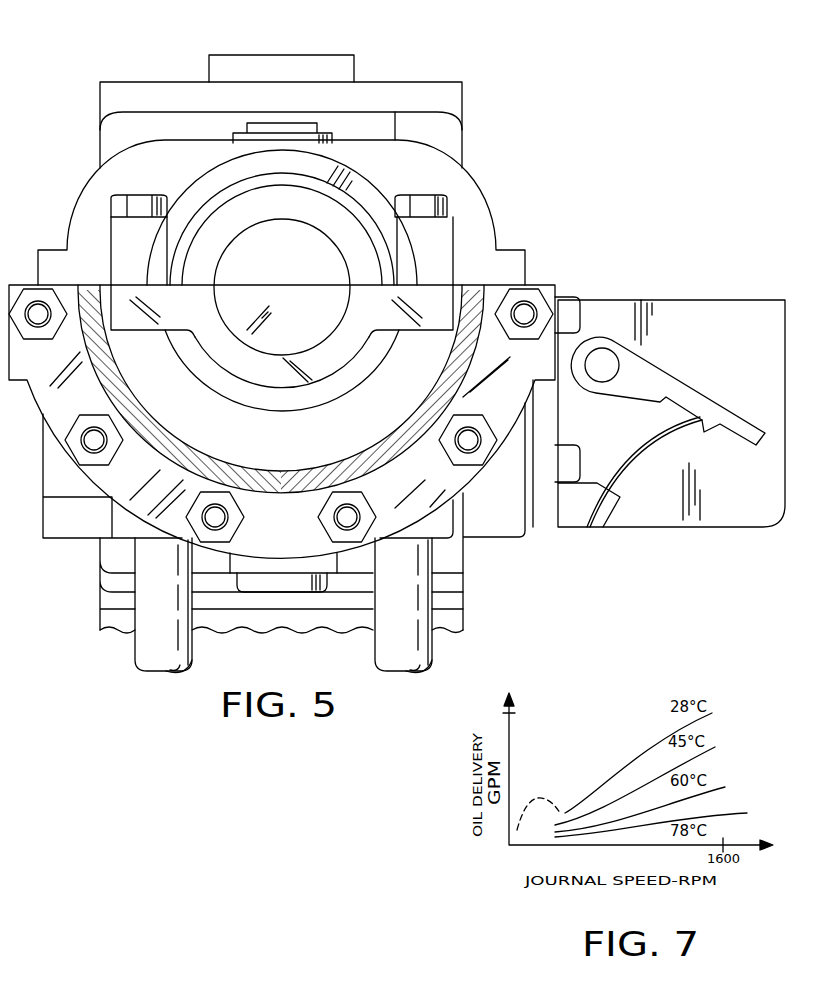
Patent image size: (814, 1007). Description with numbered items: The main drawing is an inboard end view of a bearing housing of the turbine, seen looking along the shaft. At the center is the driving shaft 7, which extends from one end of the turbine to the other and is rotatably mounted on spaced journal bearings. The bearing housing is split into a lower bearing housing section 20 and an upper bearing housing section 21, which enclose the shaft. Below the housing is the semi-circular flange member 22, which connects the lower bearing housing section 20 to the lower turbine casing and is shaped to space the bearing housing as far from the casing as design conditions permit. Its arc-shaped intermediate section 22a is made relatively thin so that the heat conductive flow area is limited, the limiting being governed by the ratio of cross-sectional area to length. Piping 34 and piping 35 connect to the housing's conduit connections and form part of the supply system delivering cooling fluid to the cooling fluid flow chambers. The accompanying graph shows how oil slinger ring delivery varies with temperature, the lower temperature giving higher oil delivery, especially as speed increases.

The driving shaft 7 is at (294, 298).
The lower bearing housing section 20 is at (337, 357).
The upper bearing housing section 21 is at (362, 192).
The semi-circular flange member 22 is at (418, 493).
The intermediate section 22a is at (197, 457).
The piping 34 is at (410, 637).
The piping 35 is at (143, 638).